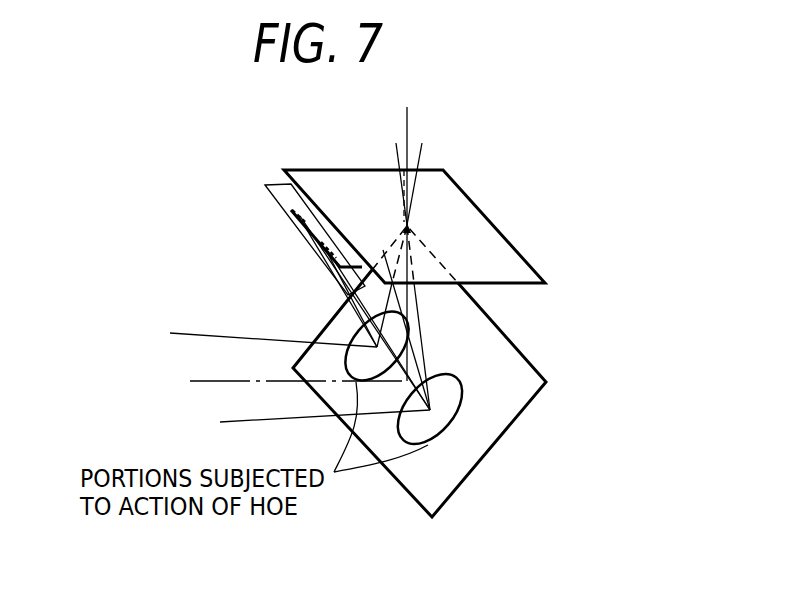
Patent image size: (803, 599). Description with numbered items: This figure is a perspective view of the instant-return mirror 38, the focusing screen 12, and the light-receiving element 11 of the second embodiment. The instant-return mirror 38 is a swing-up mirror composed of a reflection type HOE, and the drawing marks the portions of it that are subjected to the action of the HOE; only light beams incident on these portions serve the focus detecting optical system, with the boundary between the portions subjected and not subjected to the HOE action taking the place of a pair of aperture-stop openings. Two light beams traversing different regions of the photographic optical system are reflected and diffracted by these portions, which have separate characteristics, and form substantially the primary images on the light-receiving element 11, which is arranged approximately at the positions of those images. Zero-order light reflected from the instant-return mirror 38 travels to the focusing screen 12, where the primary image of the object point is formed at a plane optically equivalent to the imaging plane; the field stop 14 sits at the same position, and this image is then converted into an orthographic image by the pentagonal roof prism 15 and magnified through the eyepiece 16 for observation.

The light-receiving element 11 is at (278, 185).
The focusing screen 12 is at (507, 266).
The field stop 14 is at (450, 244).
The pentagonal roof prism 15 is at (256, 214).
The eyepiece 16 is at (293, 257).
The instant-return mirror 38 is at (540, 366).